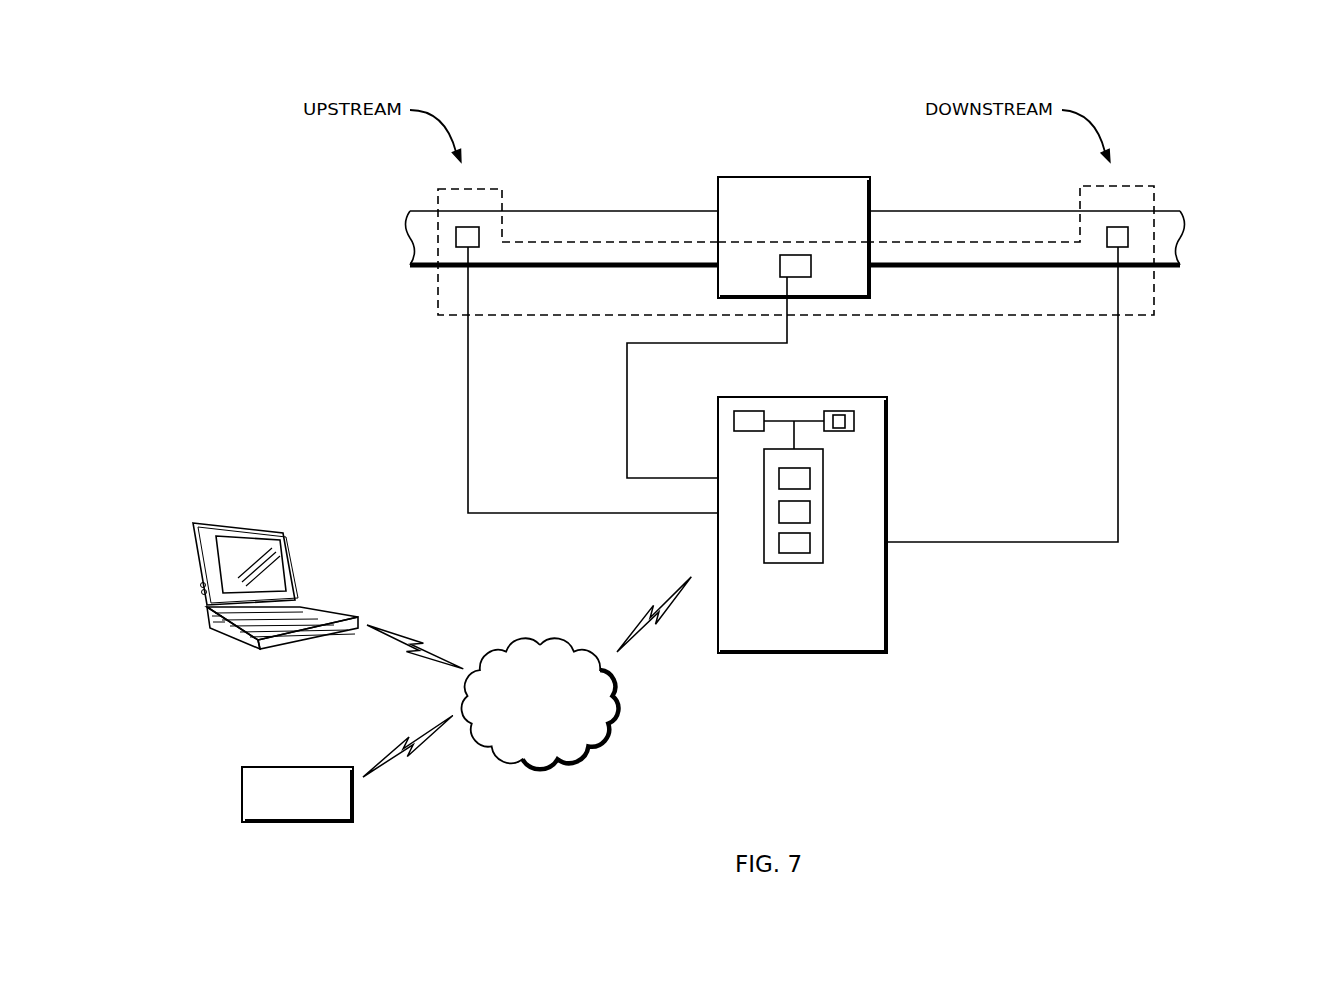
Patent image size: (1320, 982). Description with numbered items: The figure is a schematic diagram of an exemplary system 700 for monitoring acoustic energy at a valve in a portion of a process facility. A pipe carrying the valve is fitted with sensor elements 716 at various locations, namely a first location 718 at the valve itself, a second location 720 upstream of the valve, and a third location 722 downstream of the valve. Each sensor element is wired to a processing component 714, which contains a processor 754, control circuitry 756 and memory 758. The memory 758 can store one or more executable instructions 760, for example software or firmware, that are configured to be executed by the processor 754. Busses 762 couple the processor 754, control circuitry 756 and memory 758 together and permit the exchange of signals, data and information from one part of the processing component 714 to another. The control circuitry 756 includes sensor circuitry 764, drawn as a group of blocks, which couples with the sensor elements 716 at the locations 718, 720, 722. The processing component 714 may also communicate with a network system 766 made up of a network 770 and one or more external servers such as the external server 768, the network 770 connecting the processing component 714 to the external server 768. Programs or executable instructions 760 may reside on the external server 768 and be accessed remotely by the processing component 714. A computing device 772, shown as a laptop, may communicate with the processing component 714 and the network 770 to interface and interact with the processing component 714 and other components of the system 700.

The system 700 is at (248, 102).
The processing component 714 is at (875, 645).
The sensor elements 716 is at (455, 235).
The location 718 is at (766, 245).
The location 720 is at (448, 266).
The location 722 is at (1132, 260).
The processor 754 is at (734, 424).
The control circuitry 756 is at (774, 506).
The memory 758 is at (854, 421).
The executable instructions 760 is at (841, 428).
The busses 762 is at (790, 436).
The sensor circuitry 764 is at (823, 458).
The network system 766 is at (655, 751).
The external server 768 is at (275, 767).
The network 770 is at (552, 729).
The computing device 772 is at (308, 607).